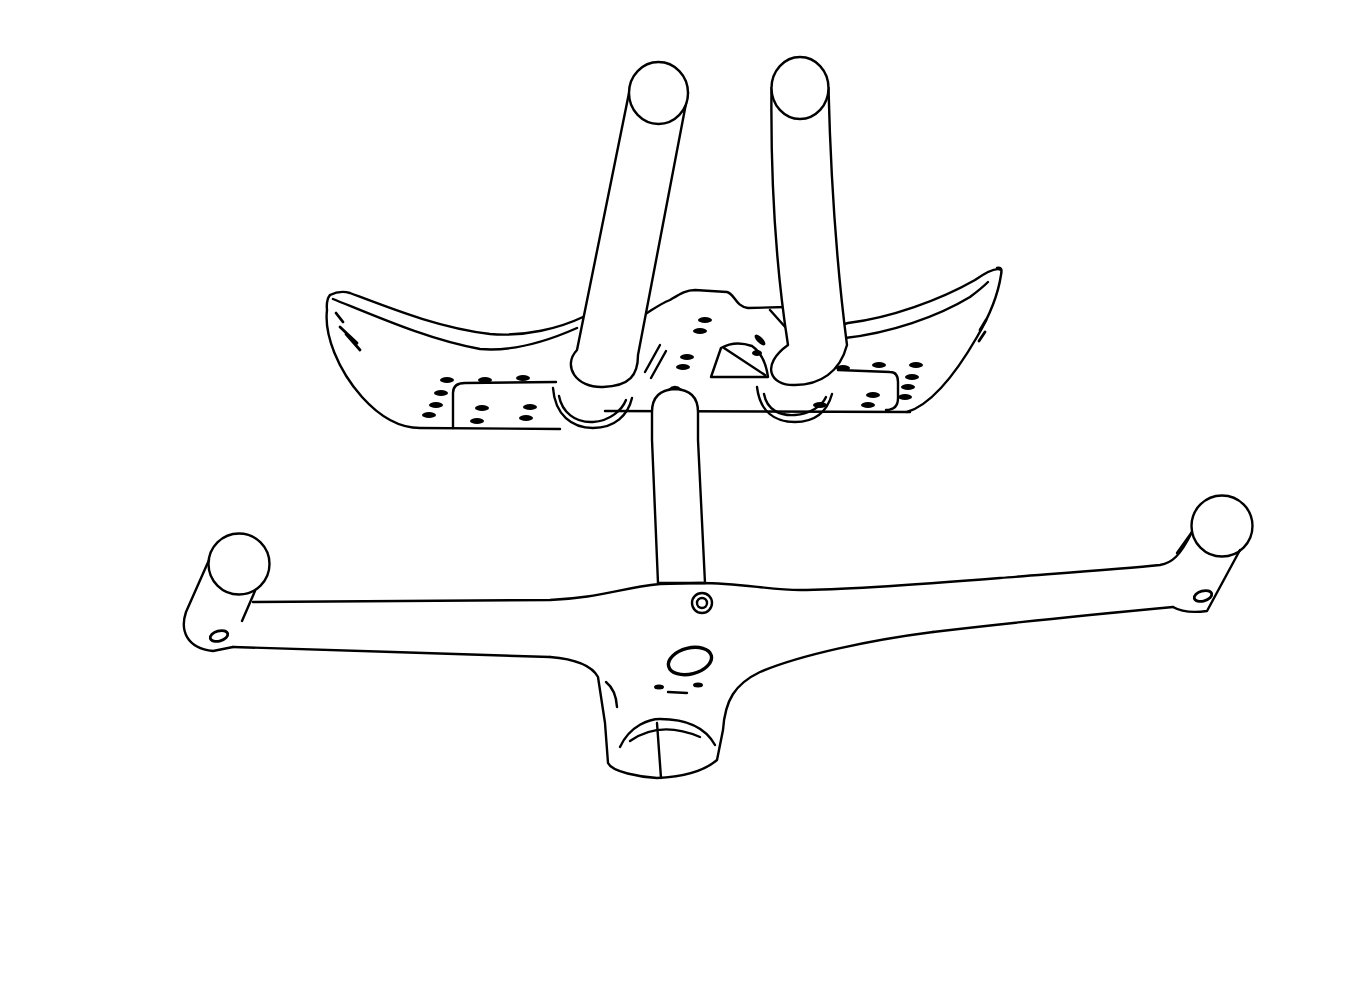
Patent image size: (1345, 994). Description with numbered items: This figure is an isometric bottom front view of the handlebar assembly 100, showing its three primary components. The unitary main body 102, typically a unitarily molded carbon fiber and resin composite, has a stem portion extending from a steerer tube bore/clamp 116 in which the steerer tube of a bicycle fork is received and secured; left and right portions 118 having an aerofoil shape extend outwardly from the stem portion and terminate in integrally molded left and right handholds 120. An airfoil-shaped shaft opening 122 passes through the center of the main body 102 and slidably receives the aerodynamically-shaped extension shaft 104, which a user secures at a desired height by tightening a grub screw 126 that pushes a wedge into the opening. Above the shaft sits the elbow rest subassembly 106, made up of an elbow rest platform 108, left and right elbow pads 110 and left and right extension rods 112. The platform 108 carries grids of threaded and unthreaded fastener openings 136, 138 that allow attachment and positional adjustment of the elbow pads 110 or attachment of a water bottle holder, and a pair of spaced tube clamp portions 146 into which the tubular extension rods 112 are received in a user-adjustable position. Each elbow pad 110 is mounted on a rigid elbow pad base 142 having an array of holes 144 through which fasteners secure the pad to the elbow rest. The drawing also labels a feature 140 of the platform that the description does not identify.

The handlebar assembly 100 is at (250, 149).
The unitary main body 102 is at (583, 640).
The extension shaft 104 is at (665, 508).
The elbow rest subassembly 106 is at (742, 284).
The elbow rest platform 108 is at (702, 303).
The elbow pads 110 is at (343, 296).
The extension rods 112 is at (624, 195).
The steerer tube bore/clamp 116 is at (687, 737).
The left and right portions 118 is at (410, 640).
The handholds 120 is at (208, 600).
The shaft opening 122 is at (690, 662).
The grub screw 126 is at (712, 603).
The fastener openings 136 is at (530, 408).
The fastener openings 138 is at (684, 370).
The ridge 140 is at (470, 337).
The elbow pad base 142 is at (386, 388).
The array of holes 144 is at (447, 379).
The tube clamp portions 146 is at (603, 395).